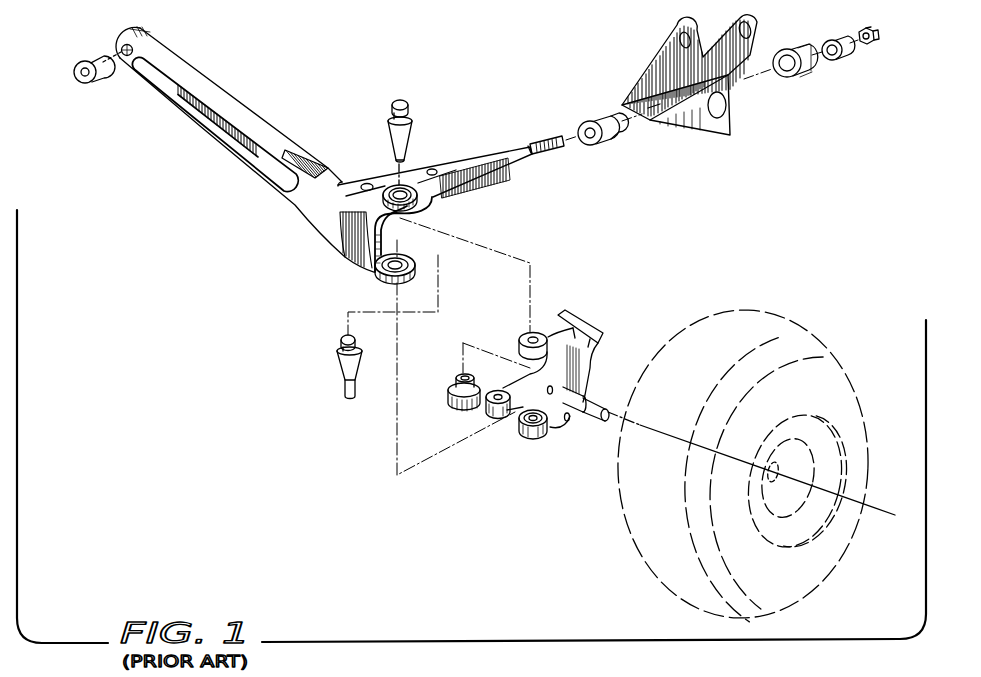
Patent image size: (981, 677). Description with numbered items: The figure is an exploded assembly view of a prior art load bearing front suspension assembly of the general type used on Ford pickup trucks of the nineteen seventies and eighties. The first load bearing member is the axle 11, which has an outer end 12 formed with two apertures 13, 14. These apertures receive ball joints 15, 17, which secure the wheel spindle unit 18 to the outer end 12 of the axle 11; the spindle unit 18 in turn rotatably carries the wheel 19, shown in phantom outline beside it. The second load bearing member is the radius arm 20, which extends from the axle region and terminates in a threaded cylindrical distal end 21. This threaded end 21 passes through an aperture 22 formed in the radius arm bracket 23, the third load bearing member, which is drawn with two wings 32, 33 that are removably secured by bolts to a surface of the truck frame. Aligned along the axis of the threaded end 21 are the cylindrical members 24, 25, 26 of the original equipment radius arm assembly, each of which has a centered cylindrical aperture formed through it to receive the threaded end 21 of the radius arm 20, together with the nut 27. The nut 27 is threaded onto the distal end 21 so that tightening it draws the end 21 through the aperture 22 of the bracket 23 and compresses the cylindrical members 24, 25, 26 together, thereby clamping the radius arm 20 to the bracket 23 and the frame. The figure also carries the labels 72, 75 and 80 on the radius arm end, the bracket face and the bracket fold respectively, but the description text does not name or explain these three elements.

The axle 11 is at (268, 125).
The outer end 12 is at (340, 220).
The aperture 13 is at (404, 185).
The aperture 14 is at (388, 276).
The ball joint 15 is at (412, 106).
The ball joint 17 is at (339, 366).
The wheel spindle unit 18 is at (588, 319).
The wheel 19 is at (782, 317).
The radius arm 20 is at (446, 220).
The threaded cylindrical distal end 21 is at (552, 160).
The aperture 22 is at (713, 135).
The radius arm bracket 23 is at (692, 99).
The cylindrical member 24 is at (600, 147).
The cylindrical member 25 is at (793, 80).
The cylindrical member 26 is at (840, 64).
The nut 27 is at (874, 47).
The wing 32 is at (752, 37).
The wing 33 is at (648, 79).
The threaded bolt 72 is at (540, 147).
The bracket aperture 75 is at (733, 122).
The bracket bend line 80 is at (657, 110).